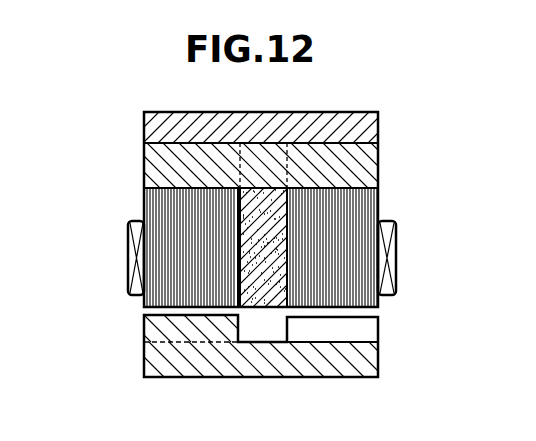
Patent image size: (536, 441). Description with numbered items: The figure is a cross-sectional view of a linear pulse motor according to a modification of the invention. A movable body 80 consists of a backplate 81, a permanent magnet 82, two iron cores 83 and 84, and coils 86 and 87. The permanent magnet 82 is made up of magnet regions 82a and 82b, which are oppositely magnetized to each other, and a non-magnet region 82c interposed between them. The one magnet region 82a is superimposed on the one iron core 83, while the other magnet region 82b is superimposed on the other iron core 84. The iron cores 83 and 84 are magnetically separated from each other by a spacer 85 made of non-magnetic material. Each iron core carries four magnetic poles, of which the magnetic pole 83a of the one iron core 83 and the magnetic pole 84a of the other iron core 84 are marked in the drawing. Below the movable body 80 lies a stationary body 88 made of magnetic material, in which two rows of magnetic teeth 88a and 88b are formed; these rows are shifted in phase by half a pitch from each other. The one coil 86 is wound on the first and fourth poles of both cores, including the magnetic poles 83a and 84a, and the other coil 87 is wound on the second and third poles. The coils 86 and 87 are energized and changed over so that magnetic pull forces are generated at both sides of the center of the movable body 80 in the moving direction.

The movable body 80 is at (137, 132).
The backplate 81 is at (373, 123).
The permanent magnet 82 is at (163, 169).
The magnet region 82a is at (367, 162).
The magnet region 82b is at (175, 152).
The non-magnet region 82c is at (263, 155).
The iron core 83 is at (359, 215).
The magnetic pole 83a is at (356, 300).
The iron core 84 is at (167, 213).
The magnetic pole 84a is at (167, 295).
The spacer 85 is at (277, 290).
The coil 86 is at (389, 243).
The coil 87 is at (130, 265).
The stationary body 88 is at (295, 362).
The magnetic teeth 88a is at (356, 332).
The magnetic teeth 88b is at (157, 328).